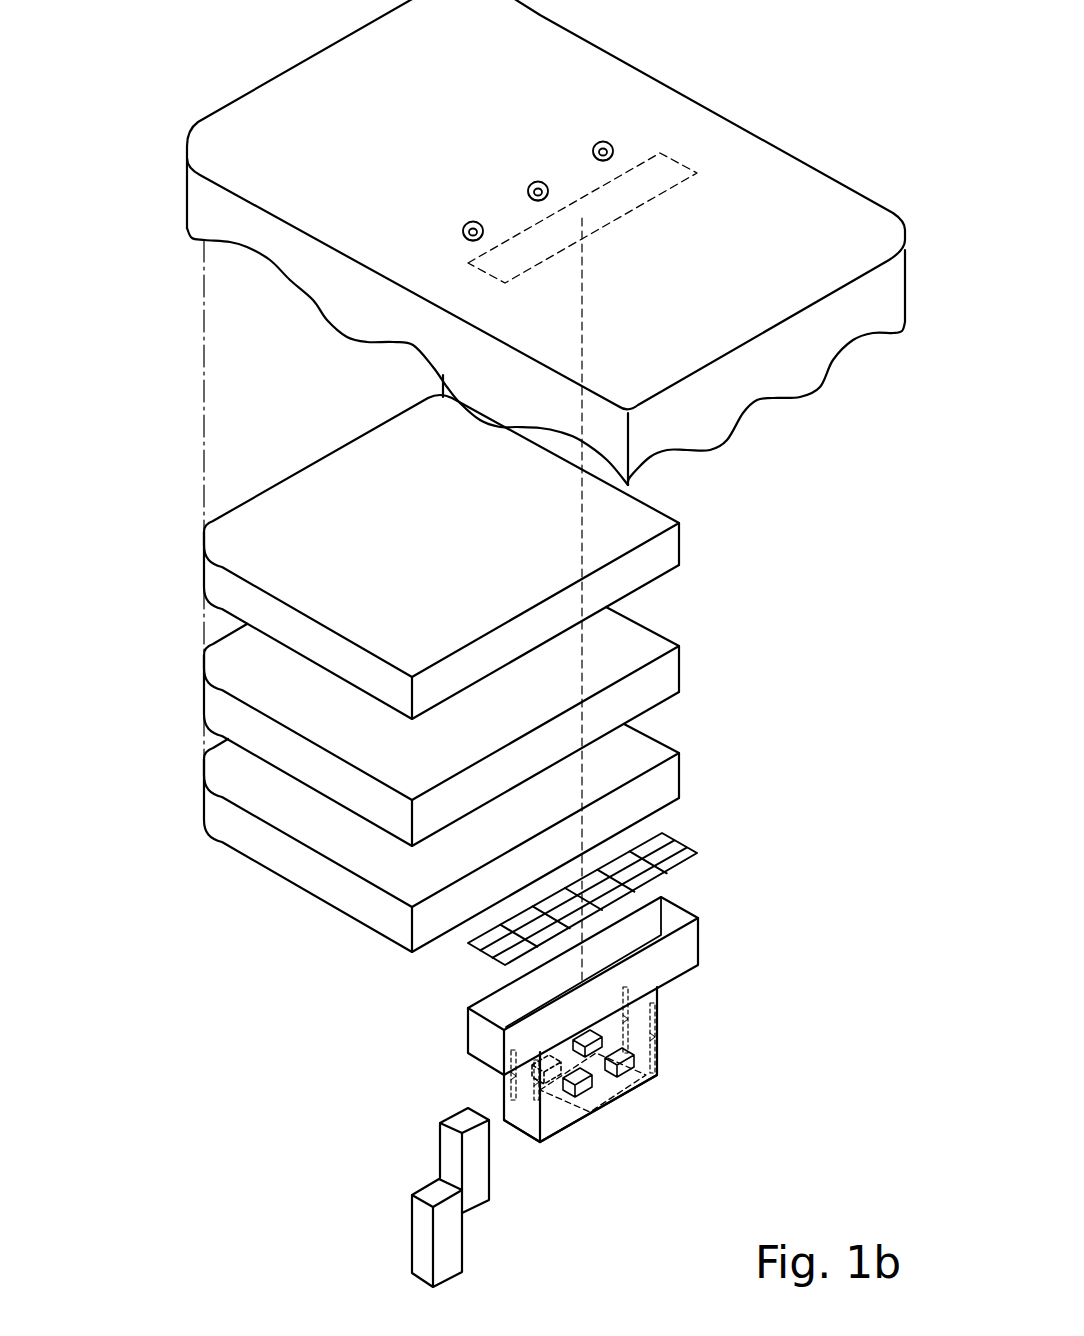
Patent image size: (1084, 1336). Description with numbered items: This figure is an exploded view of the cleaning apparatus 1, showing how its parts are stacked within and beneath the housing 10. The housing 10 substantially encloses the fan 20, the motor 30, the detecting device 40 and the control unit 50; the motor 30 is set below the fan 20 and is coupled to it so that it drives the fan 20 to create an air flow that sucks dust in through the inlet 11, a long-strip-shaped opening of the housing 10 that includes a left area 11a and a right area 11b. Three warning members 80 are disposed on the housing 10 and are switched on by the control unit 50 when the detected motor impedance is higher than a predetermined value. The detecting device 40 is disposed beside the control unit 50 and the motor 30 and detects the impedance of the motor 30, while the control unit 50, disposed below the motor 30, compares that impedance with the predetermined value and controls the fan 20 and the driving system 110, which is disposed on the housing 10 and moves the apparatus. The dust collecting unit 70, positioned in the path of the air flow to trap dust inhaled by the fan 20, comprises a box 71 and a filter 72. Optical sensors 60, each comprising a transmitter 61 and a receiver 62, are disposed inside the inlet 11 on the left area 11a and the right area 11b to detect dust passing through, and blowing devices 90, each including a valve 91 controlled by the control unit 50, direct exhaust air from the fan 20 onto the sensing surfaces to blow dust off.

The cleaning apparatus 1 is at (172, 60).
The housing 10 is at (767, 197).
The fan 20 is at (272, 610).
The motor 30 is at (272, 610).
The detecting device 40 is at (423, 1235).
The control unit 50 is at (384, 838).
The optical sensor 60 is at (633, 1215).
The transmitter 61 is at (600, 1097).
The receiver 62 is at (590, 1093).
The dust collecting unit 70 is at (793, 779).
The box 71 is at (675, 978).
The filter 72 is at (683, 842).
The warning member 80 is at (608, 138).
The blowing device 90 is at (646, 1076).
The valve 91 is at (657, 1028).
The driving system 110 is at (447, 1148).
The inlet 11 is at (622, 1101).
The left area 11a is at (532, 1118).
The right area 11b is at (626, 1101).